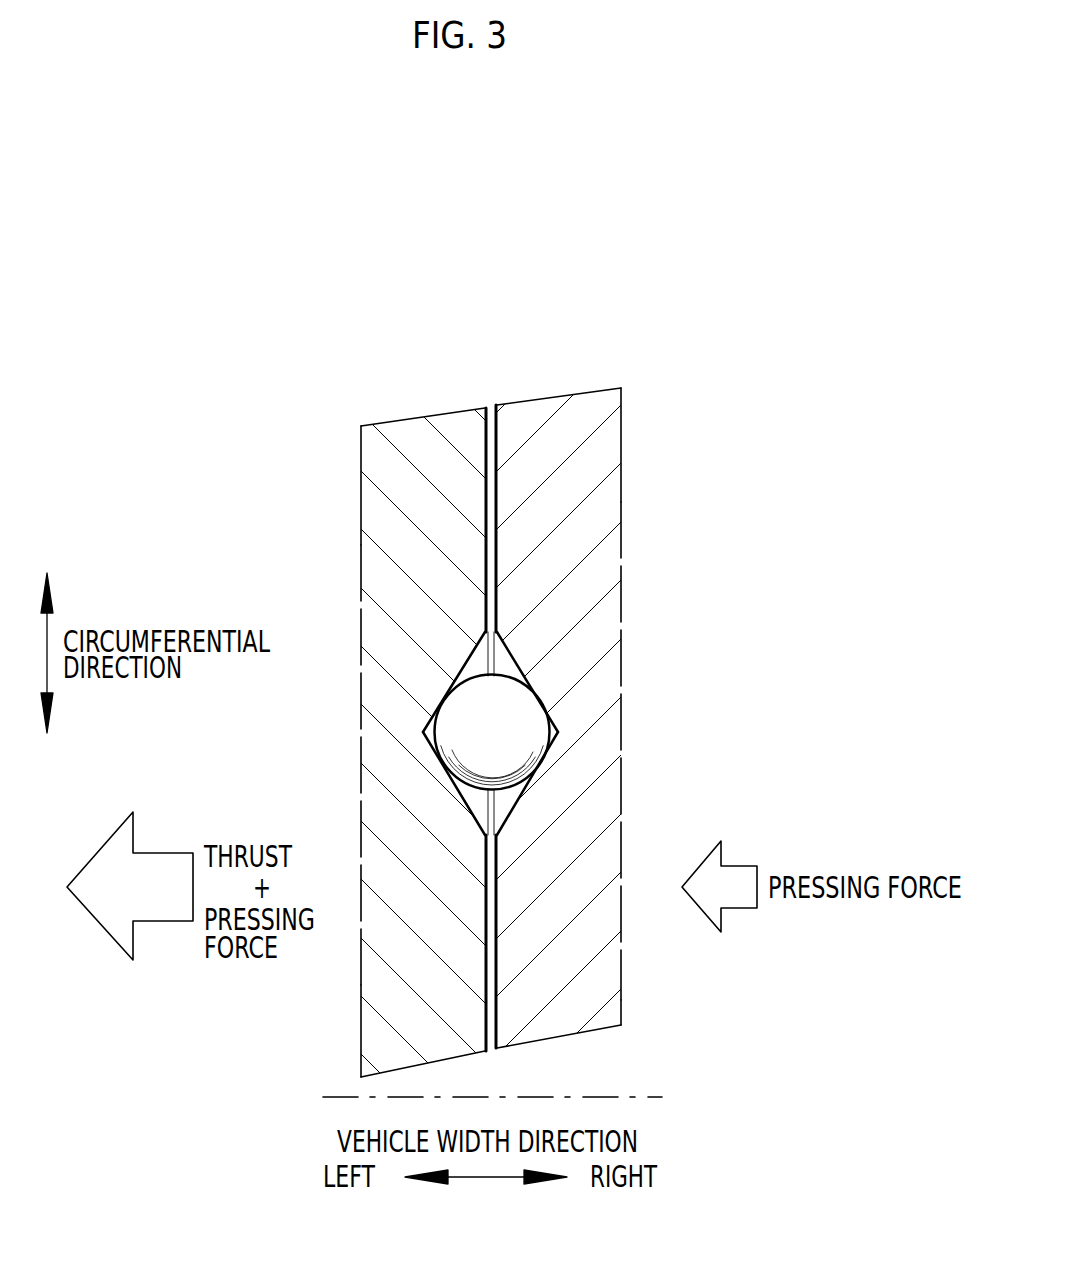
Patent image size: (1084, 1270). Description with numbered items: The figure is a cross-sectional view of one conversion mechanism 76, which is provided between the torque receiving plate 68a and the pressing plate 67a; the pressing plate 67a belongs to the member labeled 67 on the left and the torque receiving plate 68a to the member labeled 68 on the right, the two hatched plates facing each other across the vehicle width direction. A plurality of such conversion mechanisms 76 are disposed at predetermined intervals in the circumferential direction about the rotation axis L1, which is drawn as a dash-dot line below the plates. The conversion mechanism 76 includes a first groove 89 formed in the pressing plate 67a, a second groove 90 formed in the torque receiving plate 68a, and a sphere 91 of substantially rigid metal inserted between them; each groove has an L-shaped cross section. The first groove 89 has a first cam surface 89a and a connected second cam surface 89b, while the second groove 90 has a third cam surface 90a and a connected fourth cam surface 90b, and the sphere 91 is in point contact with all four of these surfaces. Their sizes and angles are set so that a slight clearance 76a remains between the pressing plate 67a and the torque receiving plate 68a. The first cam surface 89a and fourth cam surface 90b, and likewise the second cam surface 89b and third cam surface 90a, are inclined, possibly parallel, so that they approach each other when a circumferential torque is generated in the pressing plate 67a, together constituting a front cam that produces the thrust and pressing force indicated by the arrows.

The first member 67 is at (360, 446).
The pressing plate 67a is at (388, 518).
The second member 68 is at (624, 428).
The torque receiving plate 68a is at (586, 518).
The conversion mechanism 76 is at (436, 384).
The clearance 76a is at (492, 413).
The first groove 89 is at (388, 738).
The first cam surface 89a is at (450, 690).
The second cam surface 89b is at (470, 817).
The second groove 90 is at (617, 707).
The third cam surface 90a is at (532, 679).
The fourth cam surface 90b is at (527, 792).
The sphere 91 is at (492, 732).
The rotation axis L1 is at (638, 1097).